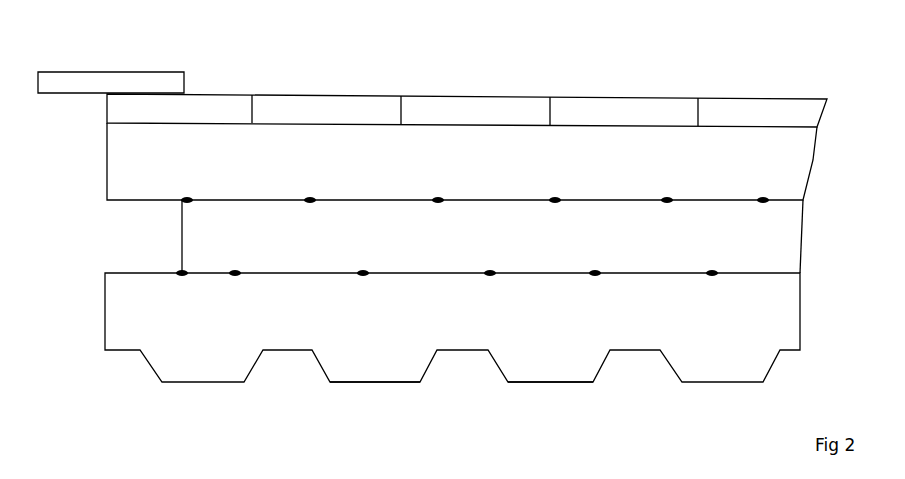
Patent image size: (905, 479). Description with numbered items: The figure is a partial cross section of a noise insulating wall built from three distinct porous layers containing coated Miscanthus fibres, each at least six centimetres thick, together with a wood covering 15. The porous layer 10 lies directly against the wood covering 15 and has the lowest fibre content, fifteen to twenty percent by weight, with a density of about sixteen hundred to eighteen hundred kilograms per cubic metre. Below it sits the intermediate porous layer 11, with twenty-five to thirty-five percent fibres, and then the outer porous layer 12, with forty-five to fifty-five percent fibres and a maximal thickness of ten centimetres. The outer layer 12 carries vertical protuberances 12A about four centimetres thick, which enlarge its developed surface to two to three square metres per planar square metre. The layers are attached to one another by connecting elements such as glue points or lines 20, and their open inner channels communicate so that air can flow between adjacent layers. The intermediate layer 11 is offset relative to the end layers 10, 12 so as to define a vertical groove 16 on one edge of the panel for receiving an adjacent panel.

The porous layer 10 is at (462, 161).
The intermediate porous layer 11 is at (696, 236).
The outer porous layer 12 is at (452, 327).
The vertical protuberances 12A is at (555, 368).
The wood covering 15 is at (630, 108).
The vertical groove 16 is at (125, 242).
The glue points or lines 20 is at (765, 203).